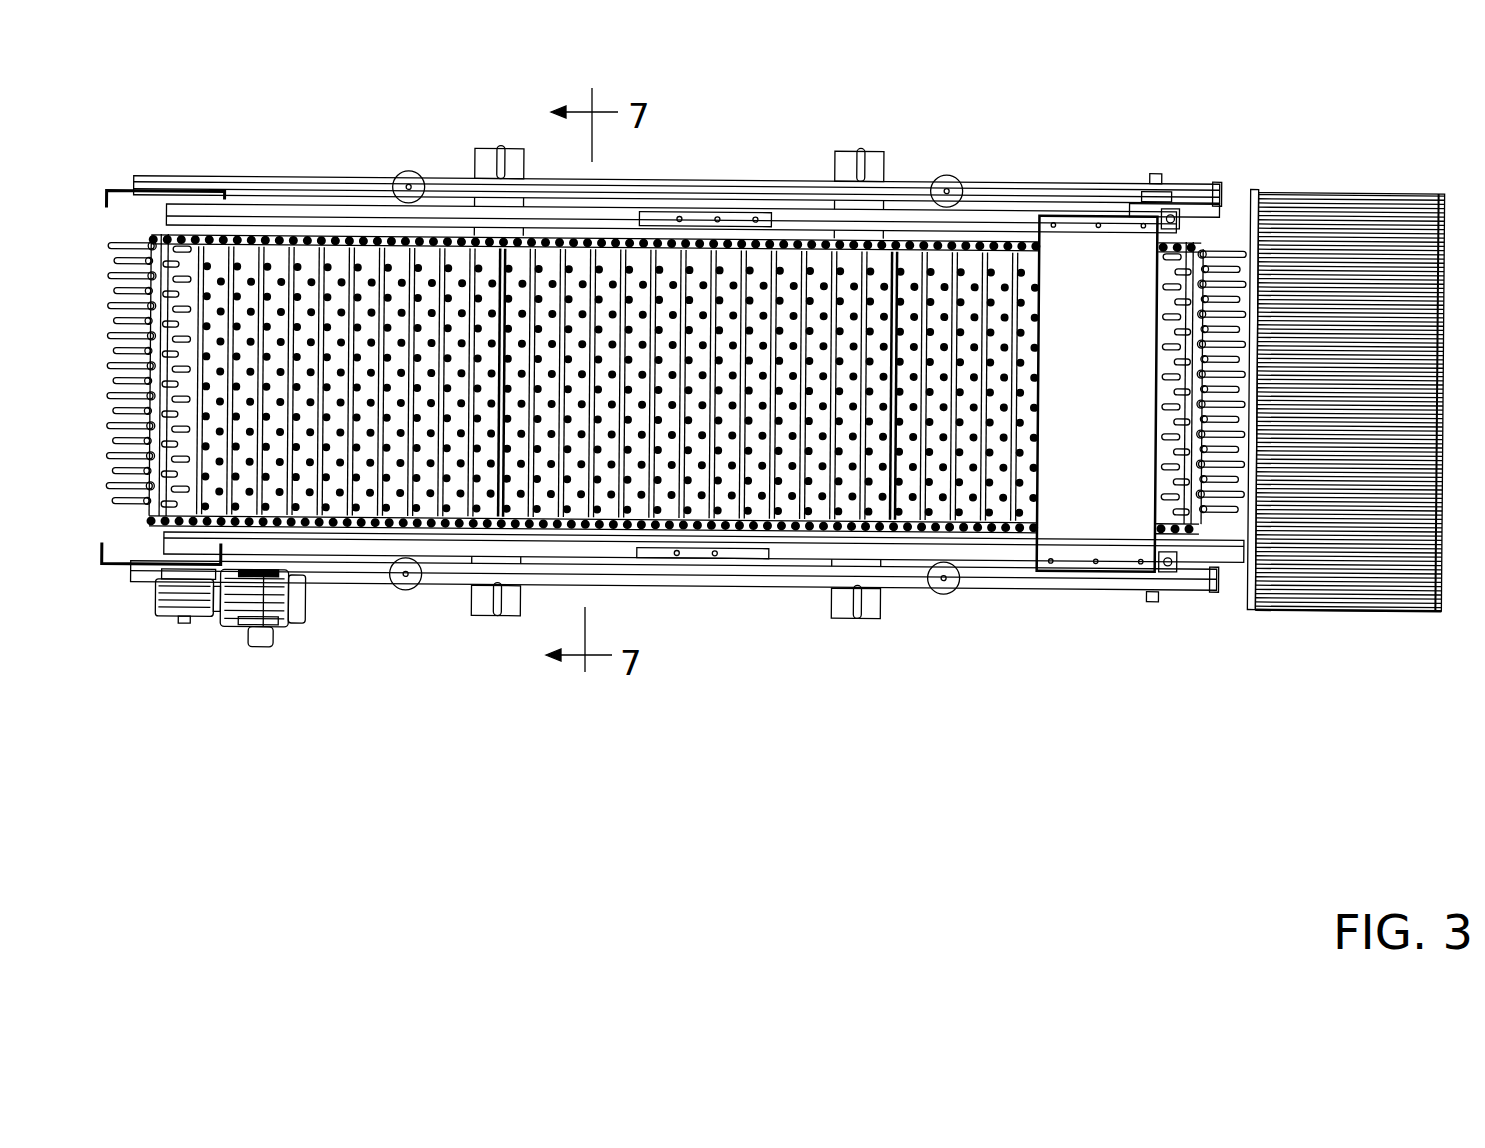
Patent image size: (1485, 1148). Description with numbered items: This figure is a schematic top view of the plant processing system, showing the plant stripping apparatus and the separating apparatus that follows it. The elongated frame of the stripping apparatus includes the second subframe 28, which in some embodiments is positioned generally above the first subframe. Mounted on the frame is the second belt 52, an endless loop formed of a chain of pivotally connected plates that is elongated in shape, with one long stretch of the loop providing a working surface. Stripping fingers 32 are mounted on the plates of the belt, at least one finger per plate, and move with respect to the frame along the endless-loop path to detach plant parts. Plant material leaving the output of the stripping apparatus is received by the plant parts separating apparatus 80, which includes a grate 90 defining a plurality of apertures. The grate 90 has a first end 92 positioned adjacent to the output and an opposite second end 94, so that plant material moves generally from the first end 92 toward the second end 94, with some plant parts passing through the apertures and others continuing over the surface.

The second subframe 28 is at (782, 222).
The stripping fingers 32 is at (912, 287).
The second belt 52 is at (125, 540).
The plant parts separating apparatus 80 is at (1325, 142).
The grate 90 is at (1316, 612).
The first end 92 is at (1247, 195).
The second end 94 is at (1437, 185).